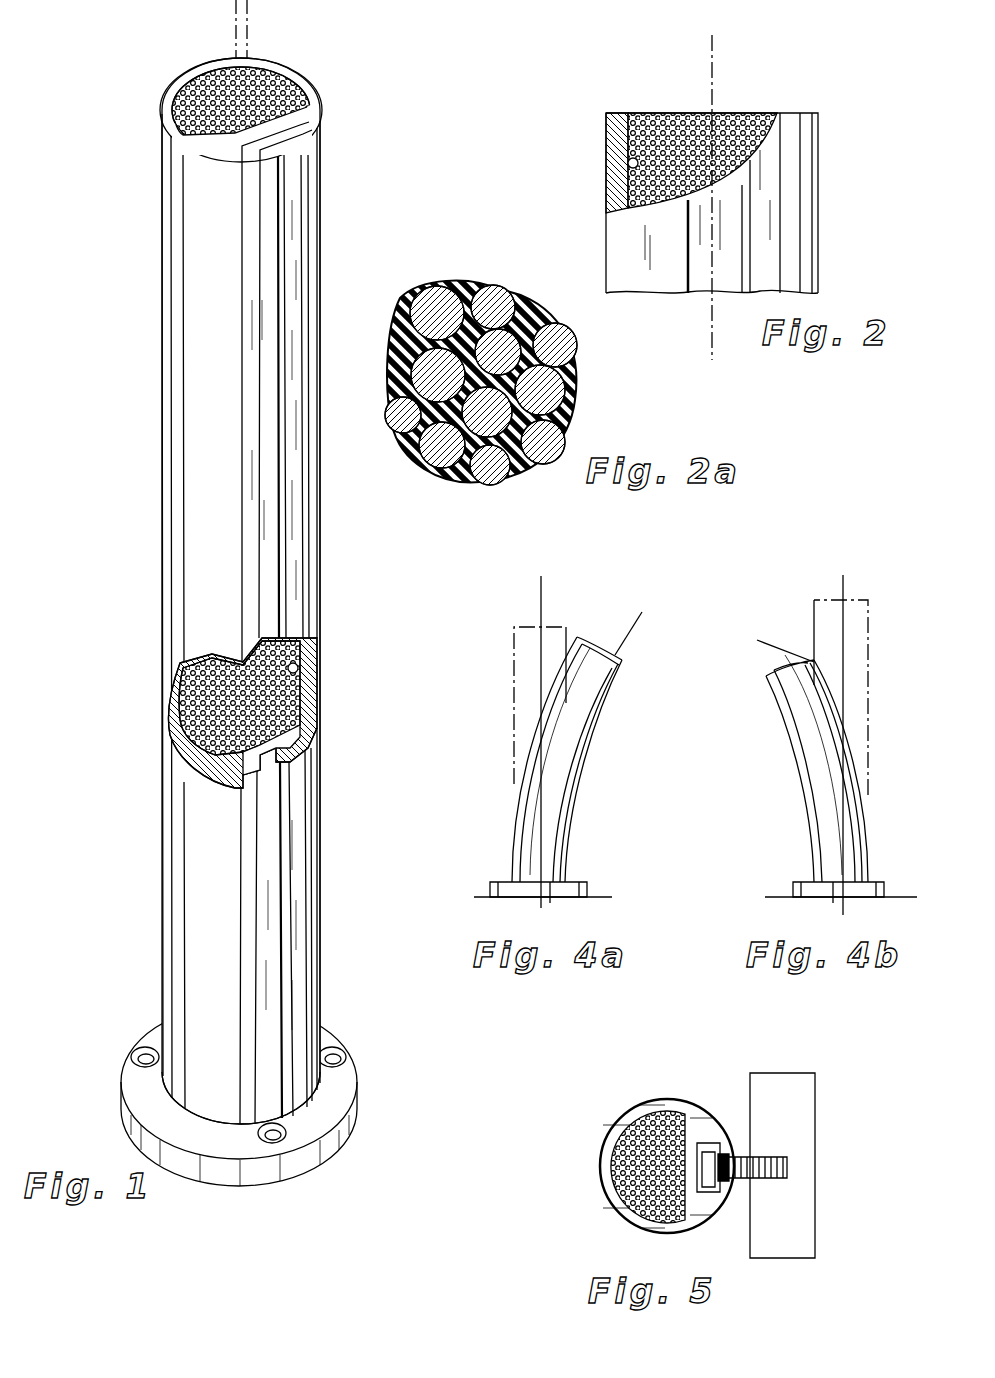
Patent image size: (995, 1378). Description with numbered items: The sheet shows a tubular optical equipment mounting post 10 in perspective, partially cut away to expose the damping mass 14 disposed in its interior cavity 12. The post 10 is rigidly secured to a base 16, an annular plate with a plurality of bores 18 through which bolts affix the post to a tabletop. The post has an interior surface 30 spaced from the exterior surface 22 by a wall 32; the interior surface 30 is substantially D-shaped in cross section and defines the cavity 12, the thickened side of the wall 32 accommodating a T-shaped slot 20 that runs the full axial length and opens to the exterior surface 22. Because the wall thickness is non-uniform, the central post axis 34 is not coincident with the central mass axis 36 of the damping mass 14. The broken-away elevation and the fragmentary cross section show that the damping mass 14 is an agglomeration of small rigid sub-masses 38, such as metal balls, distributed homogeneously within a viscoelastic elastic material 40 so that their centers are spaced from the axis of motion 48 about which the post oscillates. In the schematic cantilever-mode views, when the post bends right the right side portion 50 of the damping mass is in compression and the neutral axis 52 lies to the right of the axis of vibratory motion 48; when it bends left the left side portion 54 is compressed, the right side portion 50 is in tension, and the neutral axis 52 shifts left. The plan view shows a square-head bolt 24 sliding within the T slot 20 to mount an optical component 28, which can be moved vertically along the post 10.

In FIG. 1, the tubular mounting post 10 is at (152, 473).
In FIG. 1, the interior cavity 12 is at (260, 398).
In FIG. 1, the damping mass 14 is at (270, 78).
In FIG. 2, the damping mass 14 is at (638, 205).
In FIG. 1, the base 16 is at (330, 1020).
In FIG. 1, the bores 18 is at (148, 1050).
In FIG. 1, the T-shaped slot 20 is at (290, 130).
In FIG. 2, the T-shaped slot 20 is at (690, 290).
In FIG. 5, the T-shaped slot 20 is at (717, 1147).
In FIG. 1, the exterior surface 22 is at (183, 393).
In FIG. 2, the exterior surface 22 is at (797, 238).
In FIG. 5, the bolt 24 is at (724, 1203).
In FIG. 5, the optical component 28 is at (805, 1110).
In FIG. 1, the interior surface 30 is at (208, 82).
In FIG. 2, the interior surface 30 is at (628, 167).
In FIG. 1, the wall 32 is at (320, 110).
In FIG. 2, the wall 32 is at (608, 128).
In FIG. 5, the wall 32 is at (667, 1166).
In FIG. 1, the central post axis 34 is at (245, 135).
In FIG. 5, the central post axis 34 is at (690, 1215).
In FIG. 1, the central mass axis 36 is at (197, 105).
In FIG. 5, the central mass axis 36 is at (655, 1160).
In FIG. 1, the sub-masses 38 is at (188, 692).
In FIG. 2, the sub-masses 38 is at (757, 122).
In FIG. 2A, the sub-masses 38 is at (497, 470).
In FIG. 2, the elastic material 40 is at (665, 113).
In FIG. 2A, the elastic material 40 is at (570, 410).
In FIG. 2, the axis of motion 48 is at (713, 47).
In FIG. 4A, the axis of motion 48 is at (541, 583).
In FIG. 4B, the axis of motion 48 is at (845, 581).
In FIG. 4A, the right side portion 50 is at (585, 757).
In FIG. 4B, the right side portion 50 is at (857, 789).
In FIG. 4A, the neutral axis 52 is at (642, 612).
In FIG. 4B, the neutral axis 52 is at (757, 640).
In FIG. 4A, the left side portion 54 is at (532, 782).
In FIG. 4B, the left side portion 54 is at (814, 791).